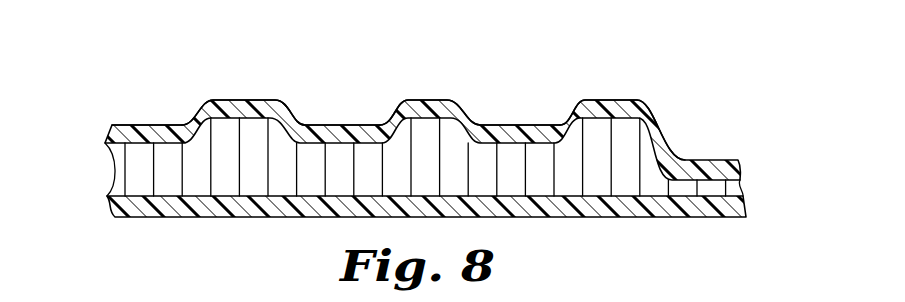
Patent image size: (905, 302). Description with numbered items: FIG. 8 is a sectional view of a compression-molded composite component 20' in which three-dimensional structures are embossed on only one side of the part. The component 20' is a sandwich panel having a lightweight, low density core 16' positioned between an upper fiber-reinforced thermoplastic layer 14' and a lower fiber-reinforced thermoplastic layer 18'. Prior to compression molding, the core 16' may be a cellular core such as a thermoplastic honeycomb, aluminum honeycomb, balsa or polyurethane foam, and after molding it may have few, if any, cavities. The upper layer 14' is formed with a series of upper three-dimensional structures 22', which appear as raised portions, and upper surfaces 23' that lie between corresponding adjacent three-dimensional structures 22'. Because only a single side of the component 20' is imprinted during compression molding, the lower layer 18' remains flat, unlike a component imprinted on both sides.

The component 20' is at (439, 154).
The layer 14' is at (439, 137).
The core 16' is at (424, 145).
The layer 18' is at (420, 177).
The upper 3-D structures 22' is at (433, 112).
The upper surfaces 23' is at (336, 87).